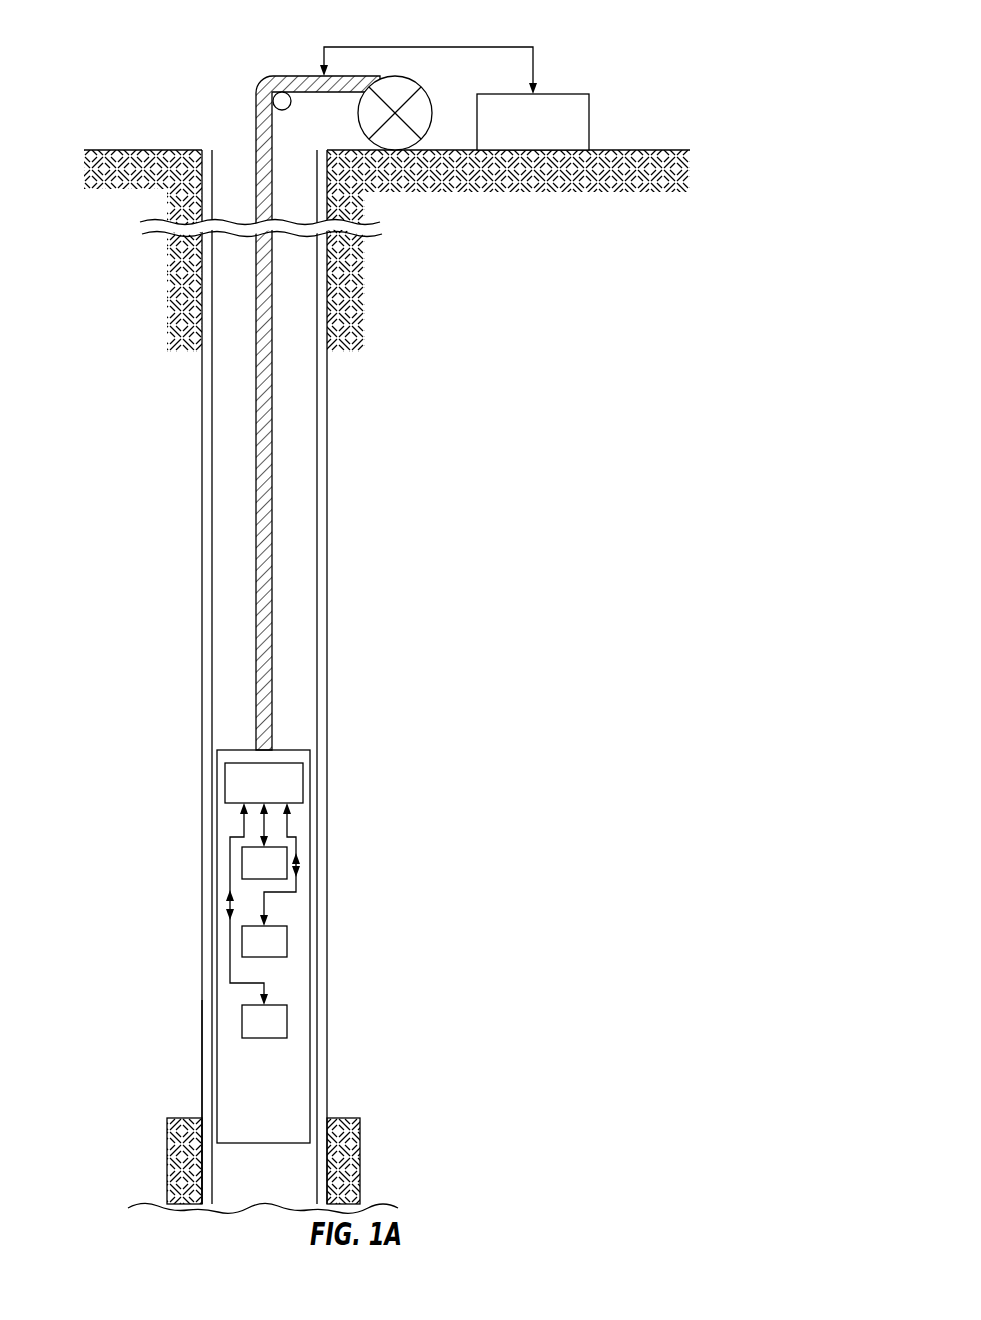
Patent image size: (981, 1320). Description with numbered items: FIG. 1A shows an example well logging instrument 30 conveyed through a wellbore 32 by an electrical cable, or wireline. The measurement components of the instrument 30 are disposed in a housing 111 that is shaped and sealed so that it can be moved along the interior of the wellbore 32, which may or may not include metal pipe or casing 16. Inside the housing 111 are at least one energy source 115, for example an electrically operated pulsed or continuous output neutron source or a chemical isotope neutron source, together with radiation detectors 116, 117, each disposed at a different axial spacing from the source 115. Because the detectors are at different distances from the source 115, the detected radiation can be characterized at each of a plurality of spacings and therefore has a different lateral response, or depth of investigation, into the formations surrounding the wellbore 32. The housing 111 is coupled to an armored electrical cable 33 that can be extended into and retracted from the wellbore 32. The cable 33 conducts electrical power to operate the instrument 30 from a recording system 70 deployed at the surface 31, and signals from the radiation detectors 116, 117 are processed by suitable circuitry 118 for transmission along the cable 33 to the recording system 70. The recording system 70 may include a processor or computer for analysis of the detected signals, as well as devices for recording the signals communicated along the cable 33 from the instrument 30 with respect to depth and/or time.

The casing 16 is at (202, 619).
The well logging instrument 30 is at (237, 739).
The surface 31 is at (127, 150).
The wellbore 32 is at (235, 164).
The armored electrical cable 33 is at (267, 87).
The recording system 70 is at (573, 108).
The housing 111 is at (200, 1060).
The energy source 115 is at (280, 1020).
The radiation detector 116 is at (280, 938).
The radiation detector 117 is at (250, 862).
The circuitry 118 is at (280, 788).